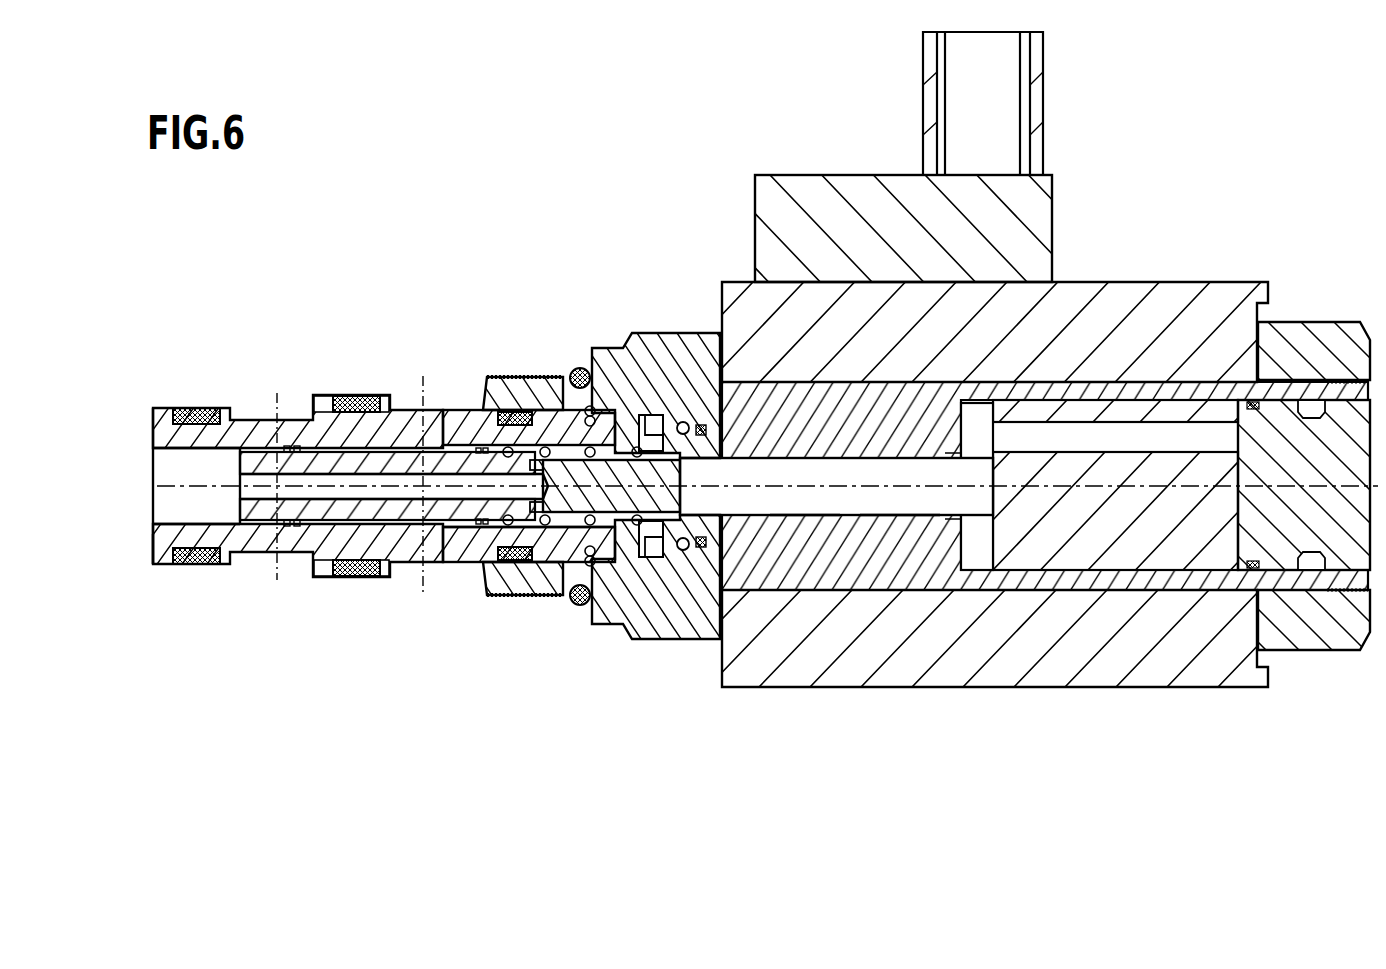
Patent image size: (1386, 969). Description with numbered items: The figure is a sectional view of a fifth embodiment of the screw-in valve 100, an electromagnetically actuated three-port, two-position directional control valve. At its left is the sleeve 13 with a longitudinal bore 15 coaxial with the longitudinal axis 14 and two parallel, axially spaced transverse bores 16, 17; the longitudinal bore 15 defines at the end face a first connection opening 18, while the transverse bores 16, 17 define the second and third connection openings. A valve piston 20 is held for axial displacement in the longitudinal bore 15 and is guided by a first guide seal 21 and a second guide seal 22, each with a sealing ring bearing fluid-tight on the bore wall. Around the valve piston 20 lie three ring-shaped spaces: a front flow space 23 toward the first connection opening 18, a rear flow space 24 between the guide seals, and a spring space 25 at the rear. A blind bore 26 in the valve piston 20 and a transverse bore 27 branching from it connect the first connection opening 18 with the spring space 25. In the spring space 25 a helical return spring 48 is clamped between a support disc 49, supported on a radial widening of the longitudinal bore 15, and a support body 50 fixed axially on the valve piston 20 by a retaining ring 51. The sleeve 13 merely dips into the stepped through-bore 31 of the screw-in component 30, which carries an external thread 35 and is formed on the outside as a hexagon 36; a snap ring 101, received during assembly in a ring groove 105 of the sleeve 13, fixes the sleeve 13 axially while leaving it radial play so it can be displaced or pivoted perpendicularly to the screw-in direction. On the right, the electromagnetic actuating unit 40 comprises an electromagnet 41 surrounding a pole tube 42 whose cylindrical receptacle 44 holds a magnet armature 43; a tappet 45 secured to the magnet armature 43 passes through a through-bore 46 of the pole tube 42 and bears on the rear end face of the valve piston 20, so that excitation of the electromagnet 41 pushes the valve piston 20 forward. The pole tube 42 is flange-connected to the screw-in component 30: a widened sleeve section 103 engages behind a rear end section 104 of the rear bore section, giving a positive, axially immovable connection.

The screw-in valve 100 is at (767, 243).
The sleeve 13 is at (376, 392).
The longitudinal axis 14 is at (177, 485).
The longitudinal bore 15 is at (173, 523).
The transverse bore 16 is at (278, 527).
The transverse bore 17 is at (430, 530).
The first connection opening 18 is at (162, 452).
The valve piston 20 is at (316, 529).
The first guide seal 21 is at (267, 410).
The second guide seal 22 is at (427, 410).
The front flow space 23 is at (240, 530).
The rear flow space 24 is at (447, 527).
The spring space 25 is at (555, 560).
The blind bore 26 is at (228, 408).
The transverse bore 27 is at (498, 410).
The screw-in component 30 is at (614, 334).
The stepped through-bore 31 is at (470, 540).
The external thread 35 is at (527, 377).
The hexagon 36 is at (723, 372).
The electromagnetic actuating unit 40 is at (1152, 272).
The electromagnet 41 is at (1227, 300).
The pole tube 42 is at (1090, 366).
The magnet armature 43 is at (1072, 553).
The cylindrical receptacle 44 is at (980, 562).
The tappet 45 is at (897, 500).
The through-bore 46 is at (817, 510).
The helical return spring 48 is at (520, 560).
The support disc 49 is at (453, 440).
The support body 50 is at (627, 620).
The retaining ring 51 is at (688, 498).
The snap ring 101 is at (571, 370).
The widened sleeve section 103 is at (652, 415).
The rear end section 104 is at (674, 418).
The ring groove 105 is at (575, 605).